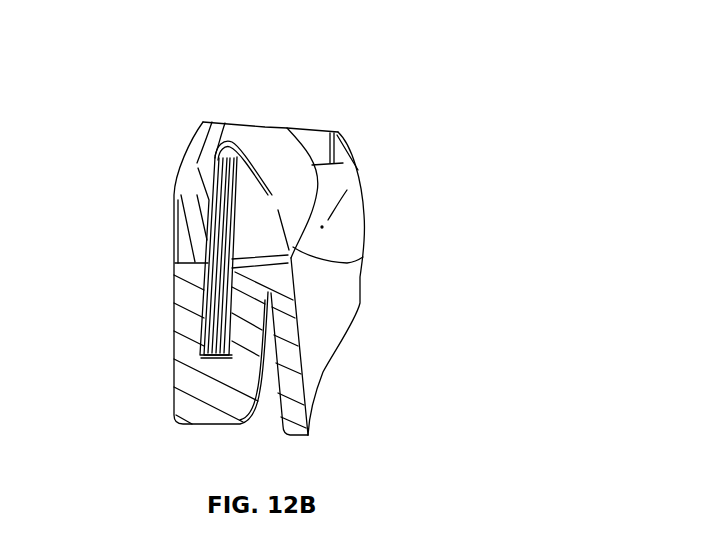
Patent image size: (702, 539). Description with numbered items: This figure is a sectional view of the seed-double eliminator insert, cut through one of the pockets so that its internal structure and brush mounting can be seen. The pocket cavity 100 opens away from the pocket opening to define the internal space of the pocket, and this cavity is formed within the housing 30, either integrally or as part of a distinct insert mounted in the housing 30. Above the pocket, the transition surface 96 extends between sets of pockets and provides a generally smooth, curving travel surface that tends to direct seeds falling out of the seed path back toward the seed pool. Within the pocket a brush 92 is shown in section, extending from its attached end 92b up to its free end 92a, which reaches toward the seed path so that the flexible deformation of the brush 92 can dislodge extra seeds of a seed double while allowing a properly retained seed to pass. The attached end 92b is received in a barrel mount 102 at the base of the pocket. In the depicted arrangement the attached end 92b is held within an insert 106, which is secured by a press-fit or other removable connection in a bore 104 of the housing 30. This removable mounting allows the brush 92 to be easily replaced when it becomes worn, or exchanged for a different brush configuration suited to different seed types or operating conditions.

The housing 30 is at (320, 307).
The transition surface 96 is at (263, 147).
The pocket cavity 100 is at (328, 158).
The brush 92 is at (208, 207).
The free end 92a is at (208, 166).
The attached end 92b is at (203, 375).
The barrel mount 102 is at (201, 327).
The bore 104 is at (176, 268).
The insert 106 is at (203, 312).